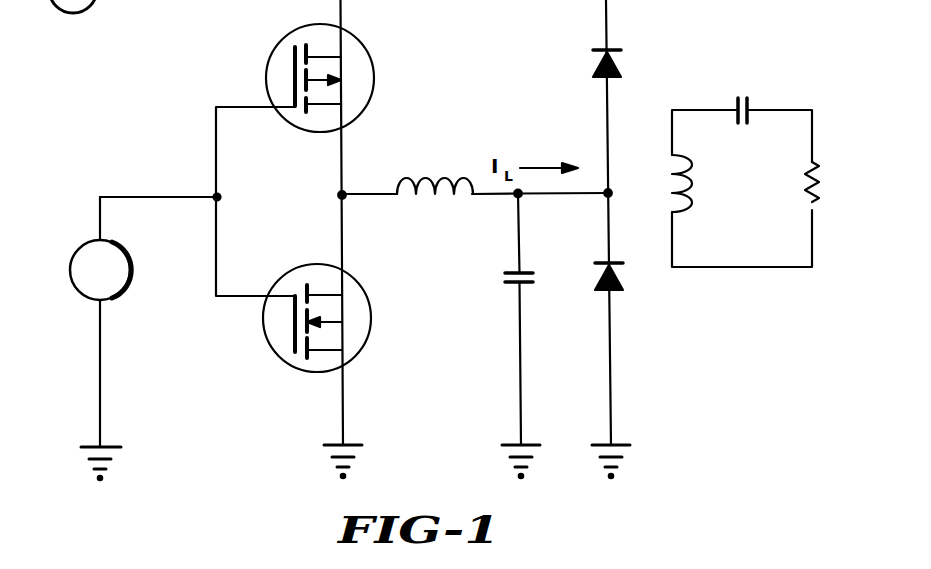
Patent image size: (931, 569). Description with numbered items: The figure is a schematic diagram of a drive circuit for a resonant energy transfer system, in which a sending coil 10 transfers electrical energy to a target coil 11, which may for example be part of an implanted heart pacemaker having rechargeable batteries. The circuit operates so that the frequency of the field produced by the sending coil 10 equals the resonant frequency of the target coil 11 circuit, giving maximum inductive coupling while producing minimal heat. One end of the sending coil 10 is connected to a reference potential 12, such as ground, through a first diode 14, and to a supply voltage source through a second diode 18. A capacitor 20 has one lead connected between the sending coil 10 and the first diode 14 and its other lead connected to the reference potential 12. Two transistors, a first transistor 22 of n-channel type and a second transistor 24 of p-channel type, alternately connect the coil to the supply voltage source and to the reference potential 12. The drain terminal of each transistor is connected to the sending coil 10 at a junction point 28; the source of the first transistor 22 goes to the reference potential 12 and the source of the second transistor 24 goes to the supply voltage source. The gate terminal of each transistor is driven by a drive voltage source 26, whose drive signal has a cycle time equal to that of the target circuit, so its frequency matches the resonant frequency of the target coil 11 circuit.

The sending coil 10 is at (443, 177).
The target coil 11 is at (690, 183).
The reference potential 12 is at (116, 446).
The first diode 14 is at (614, 262).
The second diode 18 is at (630, 44).
The capacitor 20 is at (508, 271).
The first transistor 22 is at (360, 292).
The second transistor 24 is at (365, 55).
The drive voltage source 26 is at (128, 258).
The junction point 28 is at (345, 198).